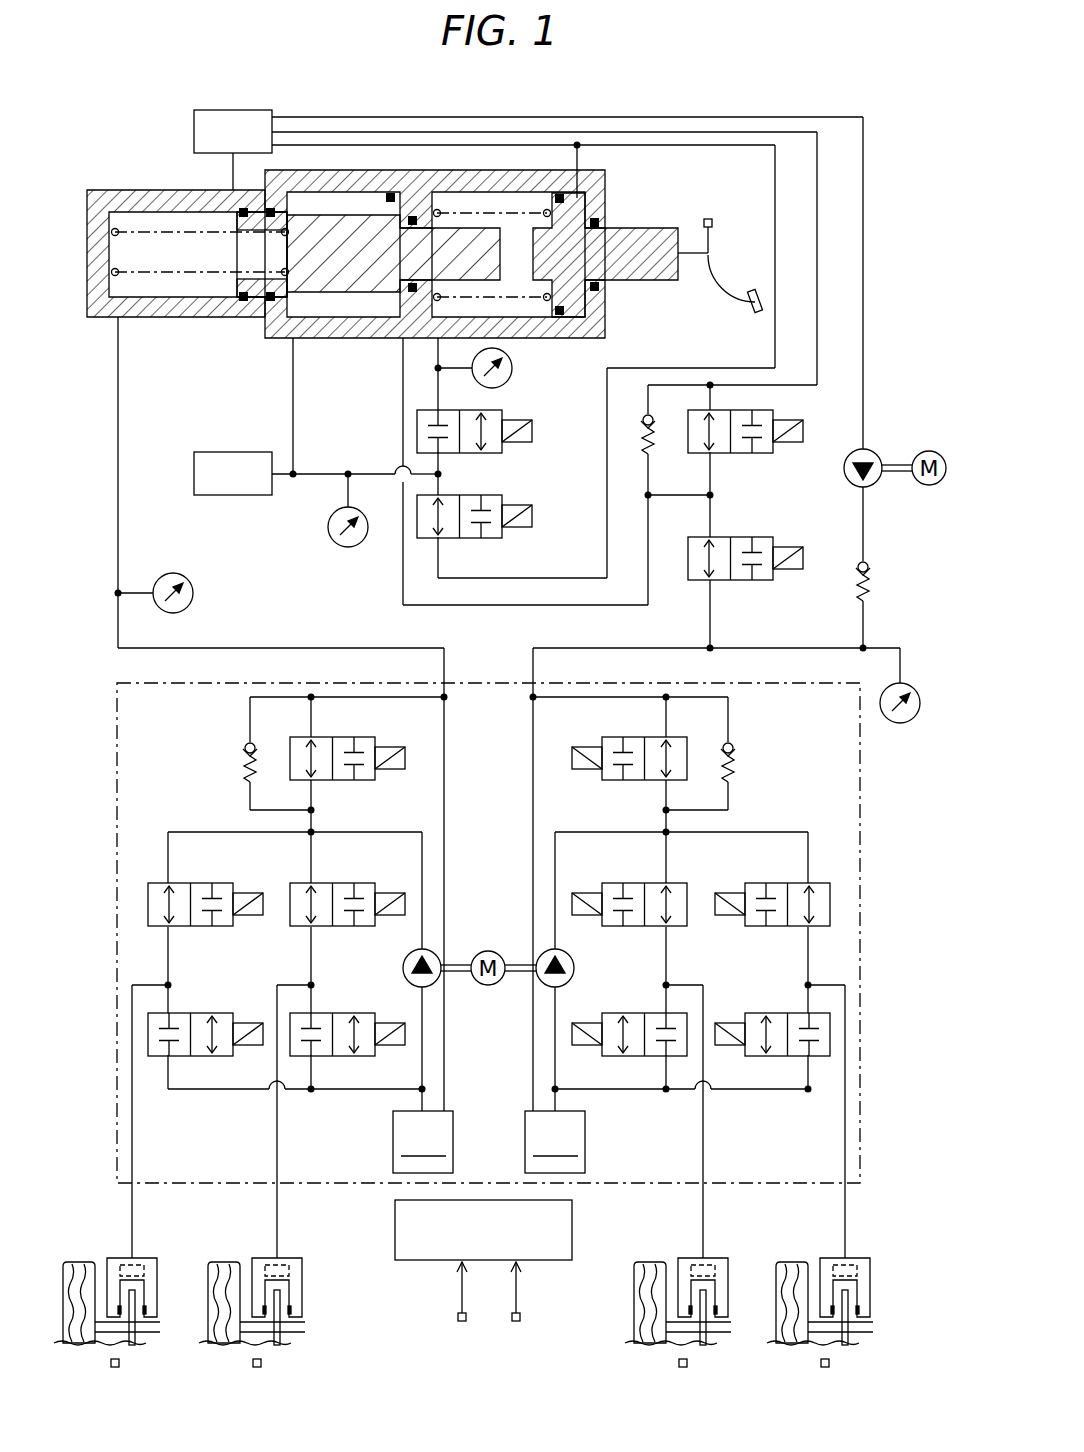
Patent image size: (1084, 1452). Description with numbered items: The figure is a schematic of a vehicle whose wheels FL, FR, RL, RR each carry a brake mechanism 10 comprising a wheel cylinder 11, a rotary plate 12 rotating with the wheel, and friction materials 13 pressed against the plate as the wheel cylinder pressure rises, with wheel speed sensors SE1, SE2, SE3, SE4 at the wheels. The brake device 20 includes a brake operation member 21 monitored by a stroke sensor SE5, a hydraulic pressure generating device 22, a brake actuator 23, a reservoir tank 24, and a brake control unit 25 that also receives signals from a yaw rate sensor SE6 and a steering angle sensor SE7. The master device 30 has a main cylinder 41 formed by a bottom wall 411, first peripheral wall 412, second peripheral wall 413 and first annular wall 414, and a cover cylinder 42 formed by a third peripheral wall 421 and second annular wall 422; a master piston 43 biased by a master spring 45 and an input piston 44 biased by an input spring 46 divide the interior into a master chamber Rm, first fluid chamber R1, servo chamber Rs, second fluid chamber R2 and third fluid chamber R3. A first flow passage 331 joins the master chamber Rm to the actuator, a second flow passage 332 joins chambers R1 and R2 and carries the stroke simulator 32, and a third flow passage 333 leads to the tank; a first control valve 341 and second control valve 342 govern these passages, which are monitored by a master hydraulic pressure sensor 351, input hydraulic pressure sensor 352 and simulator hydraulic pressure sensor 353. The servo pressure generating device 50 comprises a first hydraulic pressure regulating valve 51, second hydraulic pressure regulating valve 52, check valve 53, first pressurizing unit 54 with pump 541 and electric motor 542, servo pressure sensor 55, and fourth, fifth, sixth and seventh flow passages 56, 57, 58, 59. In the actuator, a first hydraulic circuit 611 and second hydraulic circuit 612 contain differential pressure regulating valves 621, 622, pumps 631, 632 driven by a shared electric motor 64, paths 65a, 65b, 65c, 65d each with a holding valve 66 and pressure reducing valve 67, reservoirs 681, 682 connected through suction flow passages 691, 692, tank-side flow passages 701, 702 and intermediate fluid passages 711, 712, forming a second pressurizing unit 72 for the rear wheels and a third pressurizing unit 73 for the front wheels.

The brake mechanism 10 is at (162, 1256).
The wheel cylinder 11 is at (290, 1270).
The rotary plate 12 is at (295, 1337).
The friction materials 13 is at (292, 1314).
The brake device 20 is at (878, 128).
The brake operation member 21 is at (750, 310).
The hydraulic pressure generating device 22 is at (882, 278).
The brake actuator 23 is at (882, 888).
The reservoir tank 24 is at (233, 110).
The brake control unit 25 is at (574, 1240).
The master device 30 is at (125, 128).
The stroke simulator 32 is at (194, 474).
The main cylinder 41 is at (108, 190).
The cover cylinder 42 is at (607, 330).
The master piston 43 is at (337, 213).
The input piston 44 is at (630, 228).
The master spring 45 is at (153, 287).
The input spring 46 is at (497, 208).
The servo pressure generating device 50 is at (900, 588).
The first hydraulic pressure regulating valve 51 is at (748, 582).
The second hydraulic pressure regulating valve 52 is at (748, 453).
The check valve 53 is at (645, 445).
The first pressurizing unit 54 is at (877, 468).
The servo pressure sensor 55 is at (900, 724).
The fourth flow passage 56 is at (748, 147).
The fifth flow passage 57 is at (865, 172).
The sixth flow passage 58 is at (652, 470).
The seventh flow passage 59 is at (675, 498).
The electric motor 64 is at (488, 988).
The holding valve 66 is at (200, 883).
The pressure reducing valve 67 is at (226, 1013).
The second pressurizing unit 72 is at (531, 908).
The third pressurizing unit 73 is at (446, 908).
The path 65a is at (166, 832).
The path 65b is at (311, 860).
The path 65c is at (668, 860).
The path 65d is at (810, 832).
The first flow passage 331 is at (118, 528).
The second flow passage 332 is at (345, 468).
The third flow passage 333 is at (575, 578).
The first control valve 341 is at (478, 455).
The second control valve 342 is at (478, 540).
The master hydraulic pressure sensor 351 is at (193, 597).
The input hydraulic pressure sensor 352 is at (512, 378).
The simulator hydraulic pressure sensor 353 is at (348, 547).
The bottom wall 411 is at (98, 300).
The first peripheral wall 412 is at (228, 300).
The second peripheral wall 413 is at (274, 340).
The first annular wall 414 is at (440, 195).
The third peripheral wall 421 is at (553, 172).
The second annular wall 422 is at (603, 287).
The pump 541 is at (846, 482).
The electric motor 542 is at (928, 488).
The first hydraulic circuit 611 is at (228, 832).
The second hydraulic circuit 612 is at (762, 832).
The first differential pressure regulating valve 621 is at (276, 737).
The second differential pressure regulating valve 622 is at (692, 725).
The pump 631 is at (403, 962).
The pump 632 is at (576, 962).
The reservoir 681 is at (423, 1142).
The reservoir 682 is at (555, 1142).
The suction flow passage 691 is at (418, 1086).
The suction flow passage 692 is at (558, 1086).
The tank-side flow passage 701 is at (446, 822).
The tank-side flow passage 702 is at (531, 760).
The intermediate fluid passage 711 is at (410, 832).
The intermediate fluid passage 712 is at (580, 832).
The first fluid chamber R1 is at (328, 307).
The second fluid chamber R2 is at (538, 374).
The third fluid chamber R3 is at (579, 200).
The master chamber Rm is at (183, 285).
The servo chamber Rs is at (418, 318).
The wheel speed sensor SE1 is at (119, 1363).
The wheel speed sensor SE2 is at (261, 1363).
The wheel speed sensor SE3 is at (687, 1363).
The wheel speed sensor SE4 is at (829, 1363).
The stroke sensor SE5 is at (706, 214).
The yaw rate sensor SE6 is at (458, 1318).
The steering angle sensor SE7 is at (520, 1318).
The front left wheel FL is at (78, 1262).
The front right wheel FR is at (222, 1262).
The rear left wheel RL is at (648, 1262).
The rear right wheel RR is at (790, 1262).